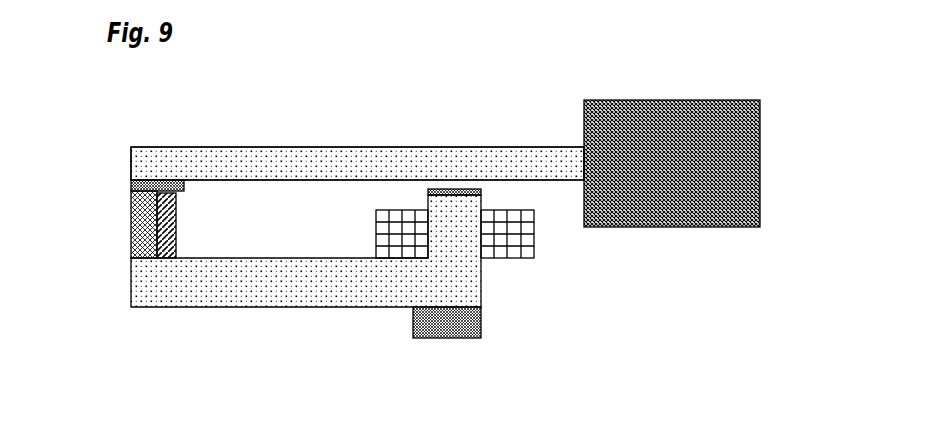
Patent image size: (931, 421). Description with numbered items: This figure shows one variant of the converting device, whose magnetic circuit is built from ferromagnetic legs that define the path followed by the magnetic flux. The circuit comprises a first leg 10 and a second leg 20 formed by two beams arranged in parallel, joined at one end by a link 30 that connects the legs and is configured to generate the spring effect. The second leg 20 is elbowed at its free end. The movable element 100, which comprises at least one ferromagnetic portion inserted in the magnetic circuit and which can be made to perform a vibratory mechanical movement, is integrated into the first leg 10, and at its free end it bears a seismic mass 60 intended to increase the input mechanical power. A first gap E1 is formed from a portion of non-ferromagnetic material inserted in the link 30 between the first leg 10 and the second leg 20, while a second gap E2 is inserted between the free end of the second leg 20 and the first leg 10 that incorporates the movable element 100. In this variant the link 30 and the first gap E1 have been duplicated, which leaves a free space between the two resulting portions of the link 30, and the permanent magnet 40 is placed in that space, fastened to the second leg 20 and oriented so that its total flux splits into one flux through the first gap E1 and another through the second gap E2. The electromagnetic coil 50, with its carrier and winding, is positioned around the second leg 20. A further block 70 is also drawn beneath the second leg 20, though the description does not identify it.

The movable element 100 is at (530, 147).
The first leg 10 is at (375, 153).
The first gap E1 is at (164, 179).
The link 30 is at (131, 222).
The permanent magnet 40 is at (176, 228).
The second leg 20 is at (302, 298).
The second gap E2 is at (456, 183).
The electromagnetic coil 50 is at (534, 245).
The seismic mass 60 is at (642, 110).
The bottom contact / bonding pad 70 is at (447, 333).